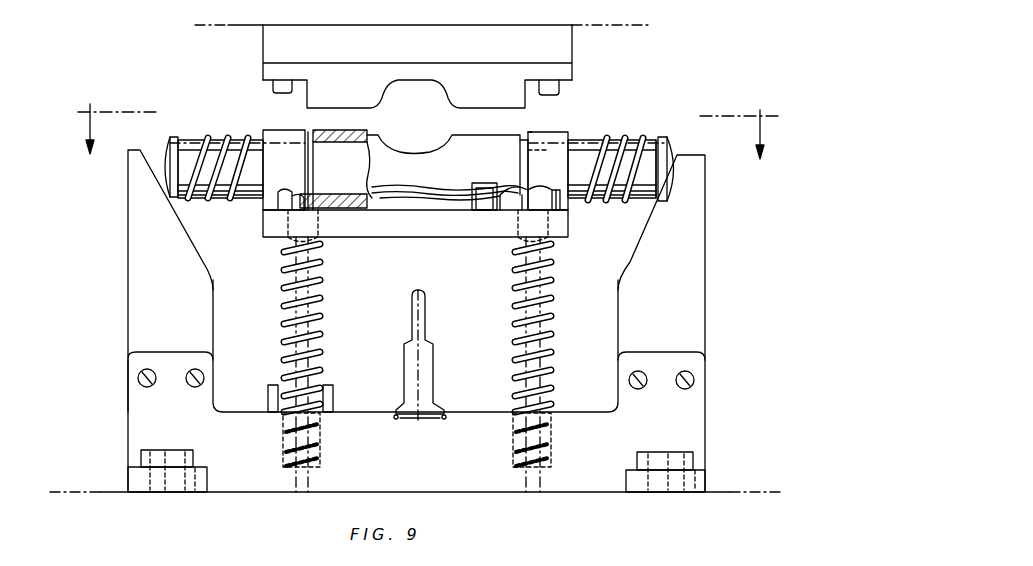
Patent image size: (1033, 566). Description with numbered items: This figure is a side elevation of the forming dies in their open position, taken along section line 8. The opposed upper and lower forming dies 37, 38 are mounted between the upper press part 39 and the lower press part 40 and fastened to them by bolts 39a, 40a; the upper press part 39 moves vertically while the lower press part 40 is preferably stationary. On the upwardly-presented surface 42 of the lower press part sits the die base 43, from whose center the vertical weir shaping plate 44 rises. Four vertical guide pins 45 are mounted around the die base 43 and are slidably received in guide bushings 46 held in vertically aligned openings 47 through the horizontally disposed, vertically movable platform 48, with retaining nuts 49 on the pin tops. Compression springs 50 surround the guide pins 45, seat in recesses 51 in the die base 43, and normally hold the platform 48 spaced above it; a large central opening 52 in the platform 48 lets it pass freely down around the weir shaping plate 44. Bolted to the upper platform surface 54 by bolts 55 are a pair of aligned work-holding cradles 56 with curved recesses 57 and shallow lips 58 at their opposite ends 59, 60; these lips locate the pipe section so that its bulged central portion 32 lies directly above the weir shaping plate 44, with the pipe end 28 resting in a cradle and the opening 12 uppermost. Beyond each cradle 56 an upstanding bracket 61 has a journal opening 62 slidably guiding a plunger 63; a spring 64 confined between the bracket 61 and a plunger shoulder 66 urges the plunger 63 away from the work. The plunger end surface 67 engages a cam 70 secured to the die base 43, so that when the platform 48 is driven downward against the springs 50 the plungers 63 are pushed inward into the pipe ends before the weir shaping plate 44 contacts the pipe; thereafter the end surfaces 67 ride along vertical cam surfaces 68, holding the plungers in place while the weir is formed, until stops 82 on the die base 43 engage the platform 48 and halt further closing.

The section line 8 is at (428, 121).
The opening 12 is at (413, 147).
The pipe section end 28 is at (530, 138).
The bulged central portion 32 is at (455, 134).
The upper forming die 37 is at (576, 79).
The lower forming die 38 is at (672, 117).
The upper press part 39 is at (248, 26).
The bolt 39a is at (272, 88).
The lower press part 40 is at (728, 492).
The bolt 40a is at (160, 452).
The upwardly-presented surface 42 is at (104, 490).
The die base 43 is at (476, 420).
The weir shaping plate 44 is at (426, 318).
The guide pin 45 is at (320, 306).
The guide bushing 46 is at (330, 230).
The opening 47 is at (263, 227).
The platform 48 is at (570, 227).
The retaining nut 49 is at (566, 203).
The compression spring 50 is at (283, 322).
The recess 51 is at (322, 442).
The opening 52 is at (385, 228).
The upper platform surface 54 is at (425, 205).
The bolt 55 is at (487, 183).
The work-holding cradle 56 is at (505, 182).
The curved recess 57 is at (337, 199).
The lip 58 is at (318, 188).
The cradle end 59 is at (277, 202).
The cradle end 60 is at (586, 147).
The bracket 61 is at (294, 169).
The journal opening 62 is at (284, 140).
The plunger 63 is at (243, 140).
The spring 64 is at (212, 140).
The plunger shoulder 66 is at (662, 140).
The plunger end surface 67 is at (165, 150).
The vertical cam surface 68 is at (213, 332).
The cam 70 is at (205, 258).
The stop 82 is at (335, 396).